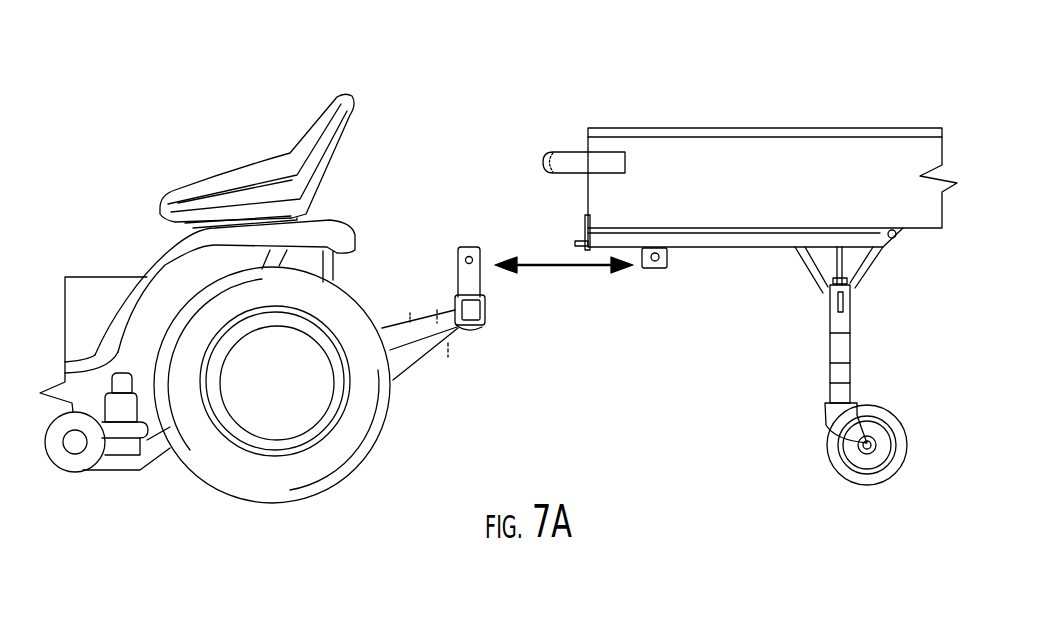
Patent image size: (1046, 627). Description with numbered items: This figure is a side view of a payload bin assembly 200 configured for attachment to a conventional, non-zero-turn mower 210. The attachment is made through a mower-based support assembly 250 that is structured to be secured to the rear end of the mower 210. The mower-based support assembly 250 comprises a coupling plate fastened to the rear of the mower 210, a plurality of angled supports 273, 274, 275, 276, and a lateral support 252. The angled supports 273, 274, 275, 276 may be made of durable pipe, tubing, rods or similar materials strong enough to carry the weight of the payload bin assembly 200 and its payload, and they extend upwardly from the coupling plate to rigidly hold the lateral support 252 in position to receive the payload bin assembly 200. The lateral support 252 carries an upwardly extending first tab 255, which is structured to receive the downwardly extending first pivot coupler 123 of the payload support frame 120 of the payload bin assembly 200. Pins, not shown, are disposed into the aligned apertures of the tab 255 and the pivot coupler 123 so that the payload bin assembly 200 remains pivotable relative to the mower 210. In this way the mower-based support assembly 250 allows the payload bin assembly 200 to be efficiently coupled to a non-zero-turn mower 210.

The payload bin assembly 200 is at (777, 68).
The mower 210 is at (235, 140).
The first tab 255 is at (483, 260).
The angled support 276 is at (432, 318).
The angled support 275 is at (410, 313).
The lateral support 252 is at (487, 313).
The angled support 274 is at (450, 360).
The angled support 273 is at (428, 370).
The first pivot coupler 123 is at (660, 268).
The mower-based support assembly 250 is at (569, 296).
The payload support frame 120 is at (750, 243).